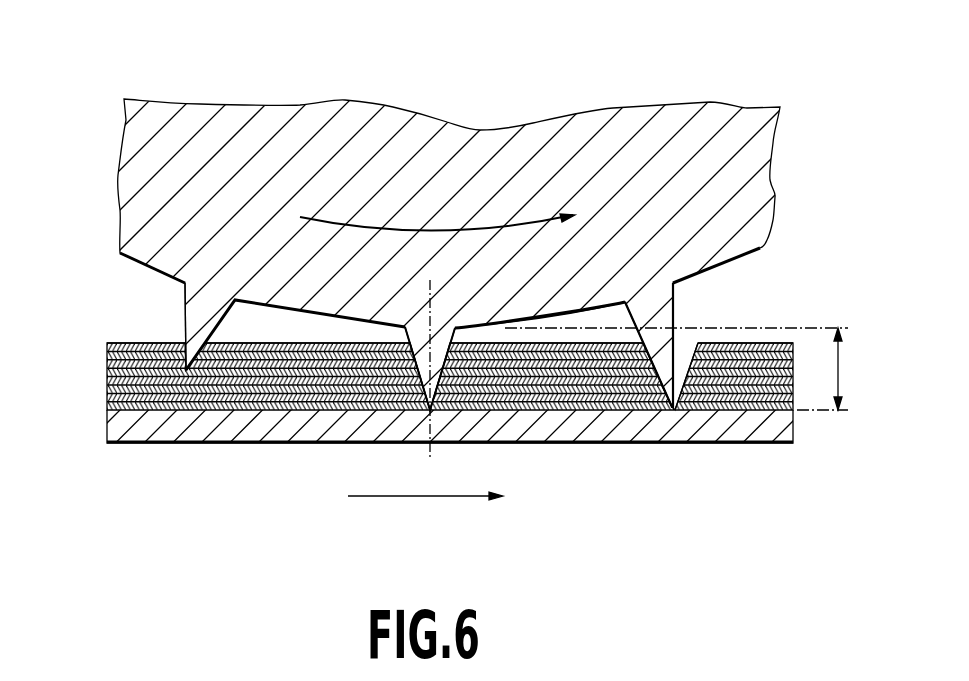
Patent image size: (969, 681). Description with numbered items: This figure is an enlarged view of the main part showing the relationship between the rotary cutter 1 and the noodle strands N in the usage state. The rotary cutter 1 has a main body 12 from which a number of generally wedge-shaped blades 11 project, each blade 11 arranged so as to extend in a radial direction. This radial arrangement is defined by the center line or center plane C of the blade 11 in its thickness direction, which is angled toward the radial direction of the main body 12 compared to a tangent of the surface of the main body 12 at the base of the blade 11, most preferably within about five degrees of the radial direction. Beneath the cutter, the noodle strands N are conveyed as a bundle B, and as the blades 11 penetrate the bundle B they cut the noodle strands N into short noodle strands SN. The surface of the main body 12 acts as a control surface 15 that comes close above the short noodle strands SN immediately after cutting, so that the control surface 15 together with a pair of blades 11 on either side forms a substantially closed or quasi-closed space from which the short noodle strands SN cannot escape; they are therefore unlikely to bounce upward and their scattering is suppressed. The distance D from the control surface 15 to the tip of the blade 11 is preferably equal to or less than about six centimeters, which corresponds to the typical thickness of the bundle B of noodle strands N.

The rotary cutter 1 is at (120, 107).
The main body 12 is at (188, 170).
The control surface 15 is at (287, 320).
The blade 11 is at (195, 338).
The noodle strands N is at (160, 343).
The bundle B is at (102, 343).
The short noodle strands SN is at (620, 410).
The center line or center plane C is at (430, 449).
The distance D is at (843, 363).